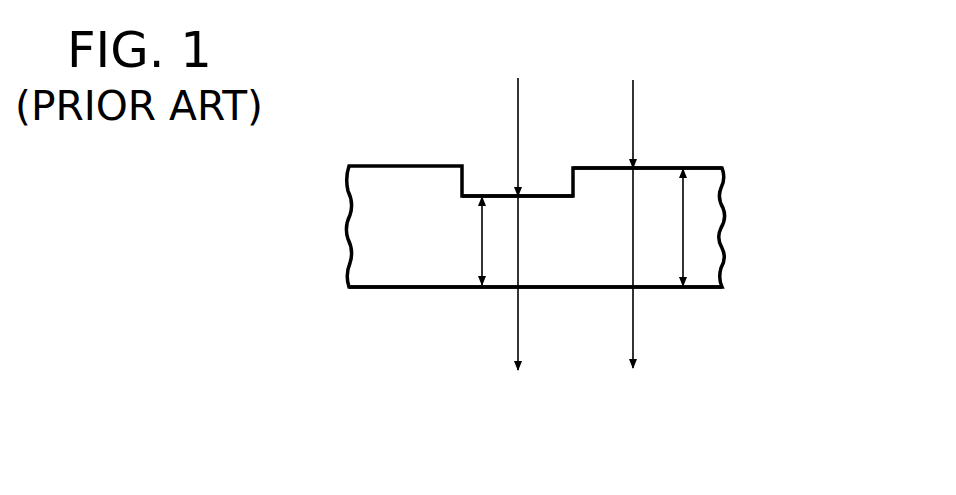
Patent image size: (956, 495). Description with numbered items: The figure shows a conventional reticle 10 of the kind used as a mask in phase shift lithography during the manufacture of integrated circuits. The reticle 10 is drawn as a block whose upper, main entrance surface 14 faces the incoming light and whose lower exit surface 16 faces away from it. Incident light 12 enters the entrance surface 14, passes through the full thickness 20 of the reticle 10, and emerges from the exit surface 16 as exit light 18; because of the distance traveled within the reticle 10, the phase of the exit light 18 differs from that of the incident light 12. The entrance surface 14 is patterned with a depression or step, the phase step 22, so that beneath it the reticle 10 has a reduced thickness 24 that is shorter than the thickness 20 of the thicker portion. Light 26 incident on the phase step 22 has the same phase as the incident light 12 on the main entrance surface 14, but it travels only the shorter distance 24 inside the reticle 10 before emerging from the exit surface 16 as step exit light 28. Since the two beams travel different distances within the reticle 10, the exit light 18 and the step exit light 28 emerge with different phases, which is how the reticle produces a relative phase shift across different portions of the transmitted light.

The reticle 10 is at (366, 223).
The incident light 12 is at (633, 115).
The entrance surface 14 is at (705, 168).
The exit surface 16 is at (705, 289).
The exit light 18 is at (633, 322).
The thickness 20 is at (683, 228).
The phase step 22 is at (555, 168).
The reduced thickness 24 is at (482, 243).
The light incident on the phase step 26 is at (518, 128).
The step exit light 28 is at (518, 323).